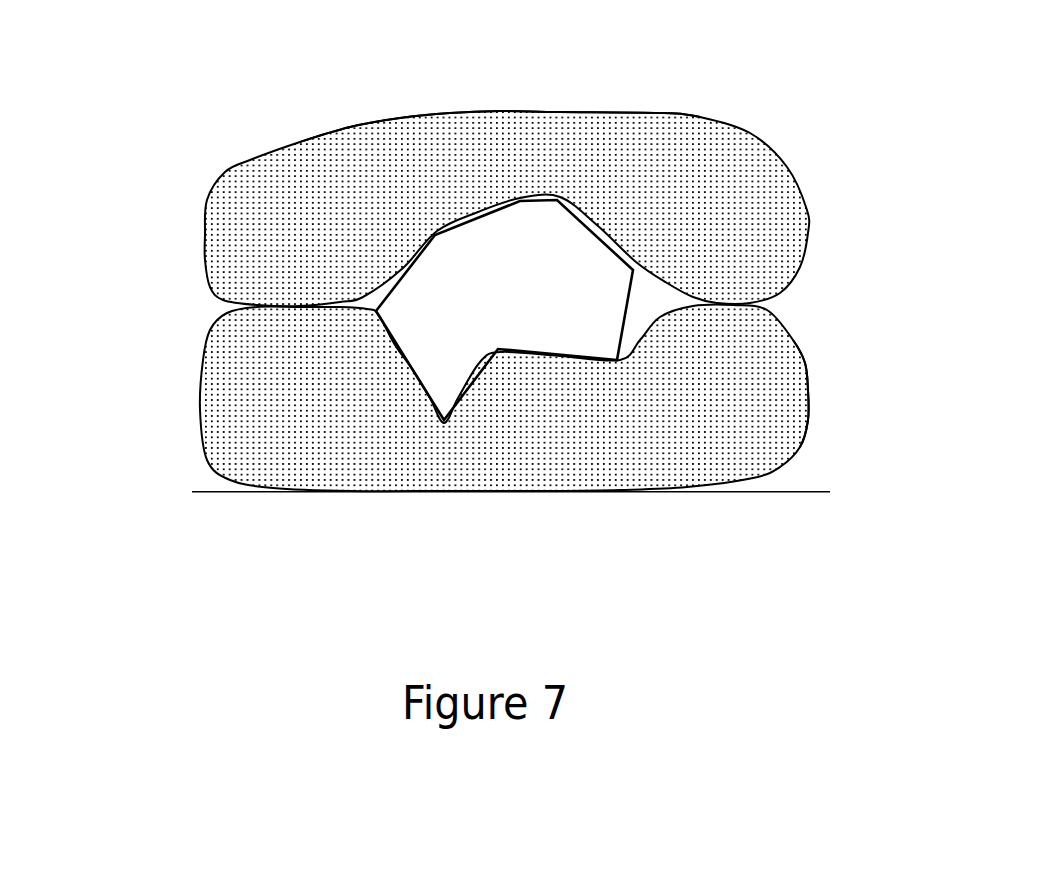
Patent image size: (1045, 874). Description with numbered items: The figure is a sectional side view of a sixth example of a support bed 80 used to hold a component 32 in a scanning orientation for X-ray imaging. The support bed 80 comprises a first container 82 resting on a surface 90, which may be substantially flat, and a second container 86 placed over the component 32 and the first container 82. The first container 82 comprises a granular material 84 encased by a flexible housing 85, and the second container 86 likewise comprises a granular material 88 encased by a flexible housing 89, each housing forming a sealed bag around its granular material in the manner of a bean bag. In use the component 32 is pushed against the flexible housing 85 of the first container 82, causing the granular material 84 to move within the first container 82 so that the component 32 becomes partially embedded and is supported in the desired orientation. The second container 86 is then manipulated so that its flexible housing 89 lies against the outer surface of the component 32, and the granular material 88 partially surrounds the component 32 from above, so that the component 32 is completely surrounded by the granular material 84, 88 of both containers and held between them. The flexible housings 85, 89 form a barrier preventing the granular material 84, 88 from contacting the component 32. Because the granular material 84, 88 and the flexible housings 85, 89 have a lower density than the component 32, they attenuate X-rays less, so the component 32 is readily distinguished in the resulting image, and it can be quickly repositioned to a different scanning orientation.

The support bed 80 is at (489, 278).
The first container 82 is at (510, 426).
The granular material 84 is at (705, 453).
The flexible housing 85 is at (807, 373).
The second container 86 is at (554, 160).
The granular material 88 is at (370, 150).
The flexible housing 89 is at (500, 108).
The surface 90 is at (212, 493).
The component 32 is at (517, 291).